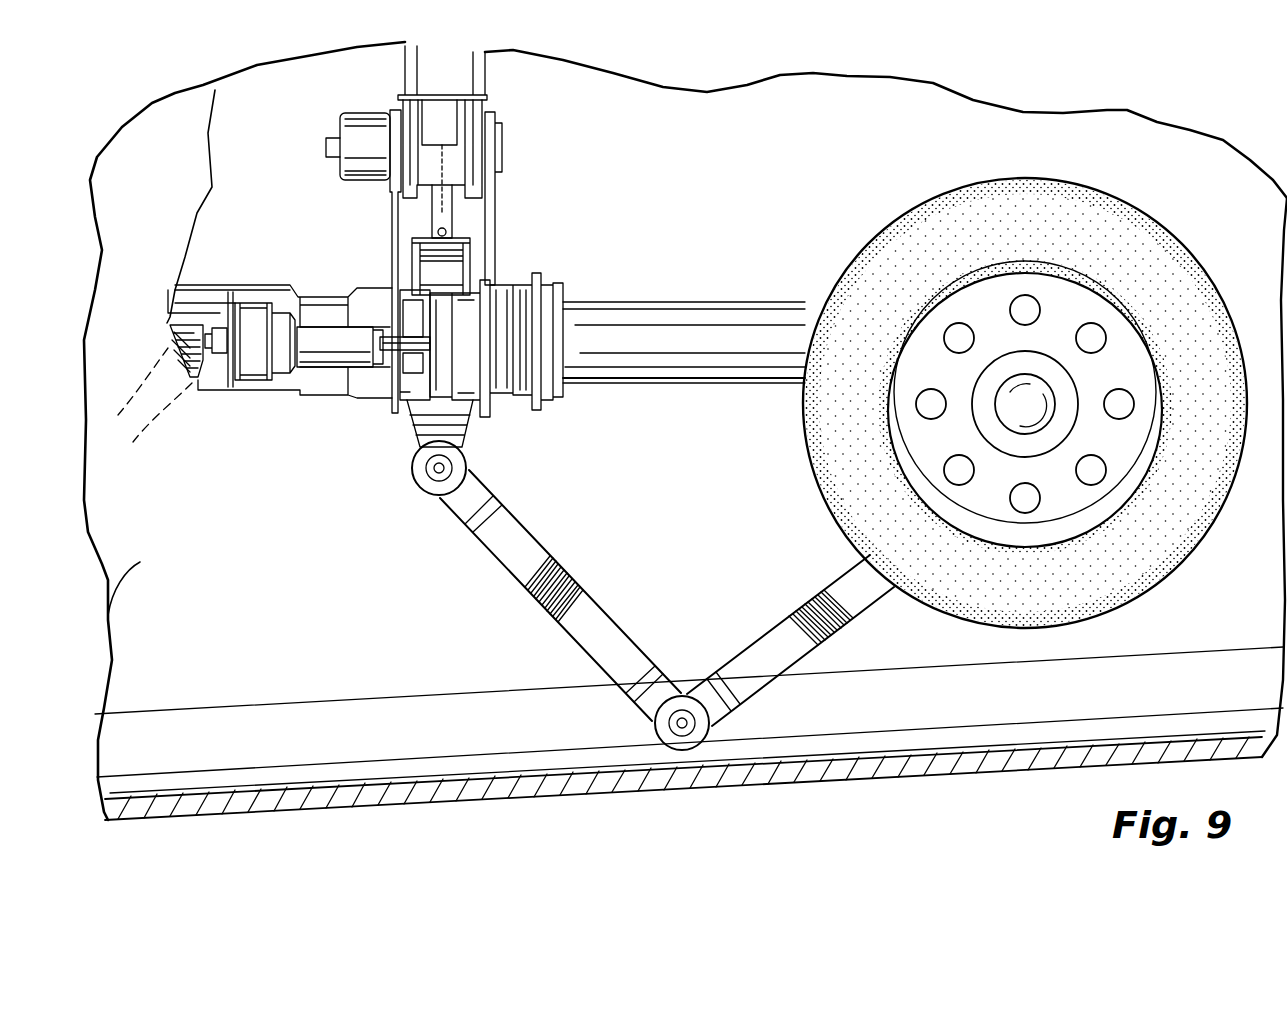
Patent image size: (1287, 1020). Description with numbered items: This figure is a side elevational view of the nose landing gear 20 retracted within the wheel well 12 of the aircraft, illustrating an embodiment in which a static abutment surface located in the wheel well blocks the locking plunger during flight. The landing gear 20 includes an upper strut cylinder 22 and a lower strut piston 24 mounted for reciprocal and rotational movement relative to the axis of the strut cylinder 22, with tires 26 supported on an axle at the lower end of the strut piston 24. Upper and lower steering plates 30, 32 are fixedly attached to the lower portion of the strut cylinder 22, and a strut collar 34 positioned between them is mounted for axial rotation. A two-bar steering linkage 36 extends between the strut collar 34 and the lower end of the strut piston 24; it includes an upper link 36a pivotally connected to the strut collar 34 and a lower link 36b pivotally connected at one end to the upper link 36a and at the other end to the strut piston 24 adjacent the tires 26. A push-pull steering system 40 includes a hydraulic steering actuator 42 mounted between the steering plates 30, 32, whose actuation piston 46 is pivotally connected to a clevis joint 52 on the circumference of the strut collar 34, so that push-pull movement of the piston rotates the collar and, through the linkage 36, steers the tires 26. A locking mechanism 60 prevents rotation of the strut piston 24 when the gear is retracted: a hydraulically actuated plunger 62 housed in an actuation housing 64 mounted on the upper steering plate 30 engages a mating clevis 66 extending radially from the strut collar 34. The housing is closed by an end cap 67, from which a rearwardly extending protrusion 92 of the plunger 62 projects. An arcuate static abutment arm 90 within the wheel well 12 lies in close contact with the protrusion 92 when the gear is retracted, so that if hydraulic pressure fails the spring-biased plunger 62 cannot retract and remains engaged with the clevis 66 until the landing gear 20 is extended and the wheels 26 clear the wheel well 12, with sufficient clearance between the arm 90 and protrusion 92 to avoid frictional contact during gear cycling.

The wheel well 12 is at (312, 559).
The nose landing gear 20 is at (681, 240).
The upper strut cylinder 22 is at (268, 287).
The lower strut piston 24 is at (729, 304).
The tires 26 is at (1097, 200).
The upper steering plate 30 is at (392, 212).
The lower steering plate 32 is at (497, 175).
The strut/steering collar 34 is at (478, 308).
The two-bar steering linkage 36 is at (653, 595).
The upper link 36a is at (538, 547).
The lower link 36b is at (779, 640).
The steering system 40 is at (331, 110).
The right hydraulic steering actuator 42 is at (488, 62).
The actuation piston 46 is at (452, 197).
The clevis joint 52 is at (413, 268).
The locking mechanism 60 is at (340, 394).
The plunger 62 is at (391, 385).
The actuation housing 64 is at (305, 367).
The clevis 66 is at (408, 399).
The end cap 67 is at (252, 380).
The arcuate static abutment arm 90 is at (200, 378).
The rearwardly extending protrusion 92 is at (218, 330).